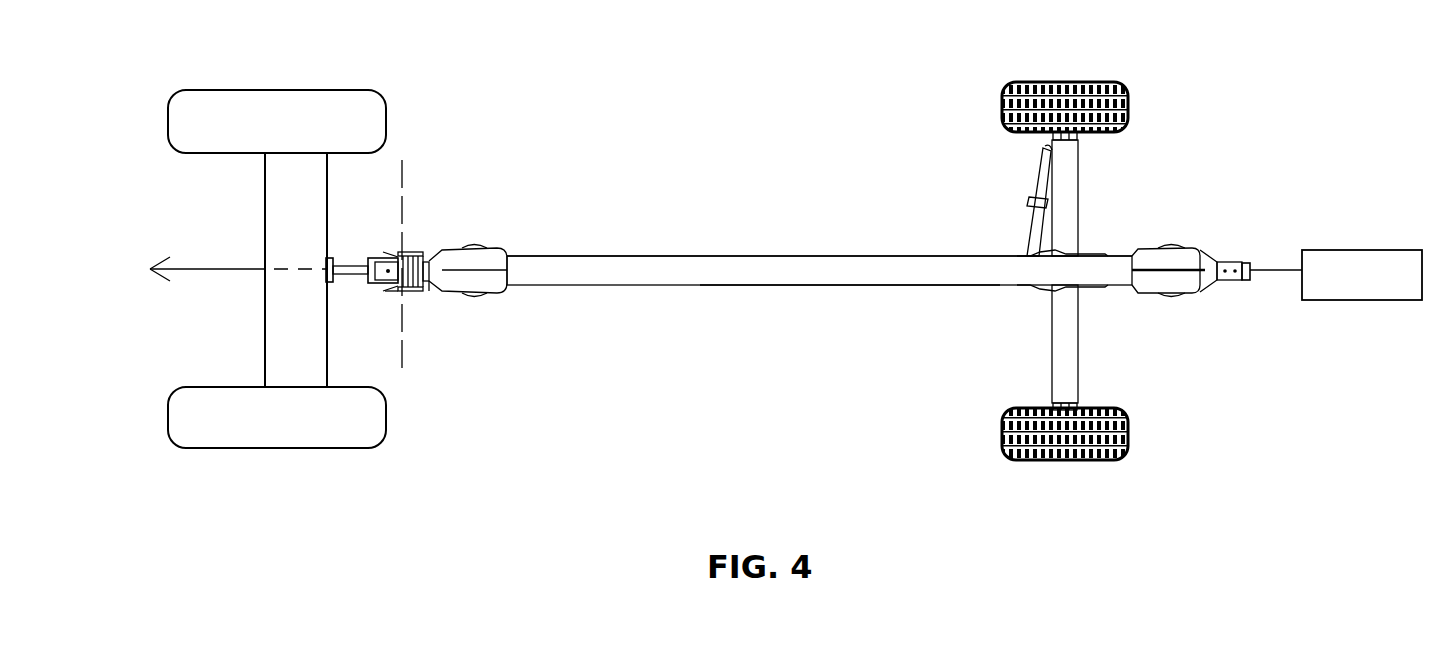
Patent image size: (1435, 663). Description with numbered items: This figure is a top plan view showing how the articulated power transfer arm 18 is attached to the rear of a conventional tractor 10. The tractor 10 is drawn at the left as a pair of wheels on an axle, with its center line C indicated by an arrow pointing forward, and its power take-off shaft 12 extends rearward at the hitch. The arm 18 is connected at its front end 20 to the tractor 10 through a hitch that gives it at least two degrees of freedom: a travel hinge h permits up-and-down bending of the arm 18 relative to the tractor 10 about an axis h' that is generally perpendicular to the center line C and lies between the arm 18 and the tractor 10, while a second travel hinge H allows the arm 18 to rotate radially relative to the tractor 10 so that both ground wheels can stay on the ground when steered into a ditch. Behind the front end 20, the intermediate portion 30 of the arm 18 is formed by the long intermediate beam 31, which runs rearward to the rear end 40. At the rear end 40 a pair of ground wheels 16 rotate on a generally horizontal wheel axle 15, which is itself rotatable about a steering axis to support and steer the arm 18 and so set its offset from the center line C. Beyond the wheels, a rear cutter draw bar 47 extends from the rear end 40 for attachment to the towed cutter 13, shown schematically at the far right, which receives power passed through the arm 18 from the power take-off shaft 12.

The tractor 10 is at (296, 72).
The power take-off shaft 12 is at (338, 260).
The cutter 13 is at (1371, 284).
The wheel axle 15 is at (1063, 190).
The ground wheels 16 is at (1023, 460).
The power transfer arm 18 is at (840, 188).
The front end 20 is at (490, 233).
The intermediate portion 30 is at (783, 243).
The intermediate beam 31 is at (647, 267).
The rear end 40 is at (1038, 300).
The rear cutter draw bar 47 is at (1218, 257).
The center line C is at (200, 266).
The travel hinge h is at (375, 327).
The axis h' is at (436, 256).
The second travel hinge H is at (437, 293).